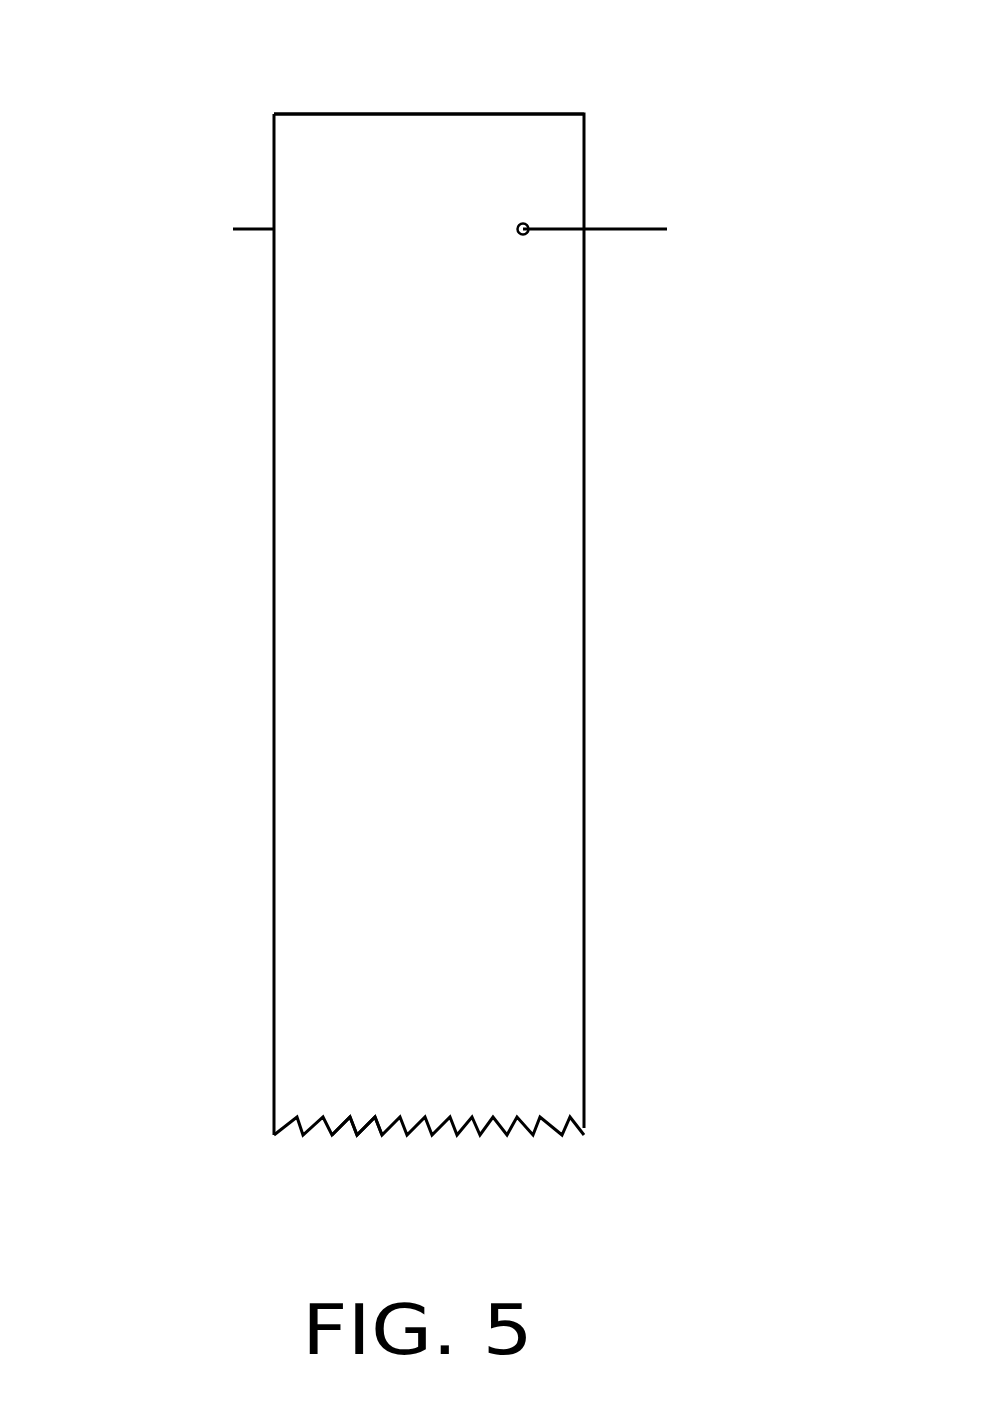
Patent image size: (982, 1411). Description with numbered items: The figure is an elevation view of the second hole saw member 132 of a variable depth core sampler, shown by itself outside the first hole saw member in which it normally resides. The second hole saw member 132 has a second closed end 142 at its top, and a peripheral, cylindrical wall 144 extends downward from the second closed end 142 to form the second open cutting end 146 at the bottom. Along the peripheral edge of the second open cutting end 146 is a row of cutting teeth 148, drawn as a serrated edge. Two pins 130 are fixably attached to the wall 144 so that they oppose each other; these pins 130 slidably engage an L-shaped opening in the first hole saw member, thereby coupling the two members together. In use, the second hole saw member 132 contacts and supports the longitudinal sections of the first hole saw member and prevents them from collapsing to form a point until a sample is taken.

The pin 130 is at (259, 228).
The second hole saw member 132 is at (208, 505).
The second closed end 142 is at (512, 113).
The peripheral cylindrical wall 144 is at (527, 802).
The second open cutting end 146 is at (525, 1121).
The cutting teeth 148 is at (372, 1135).